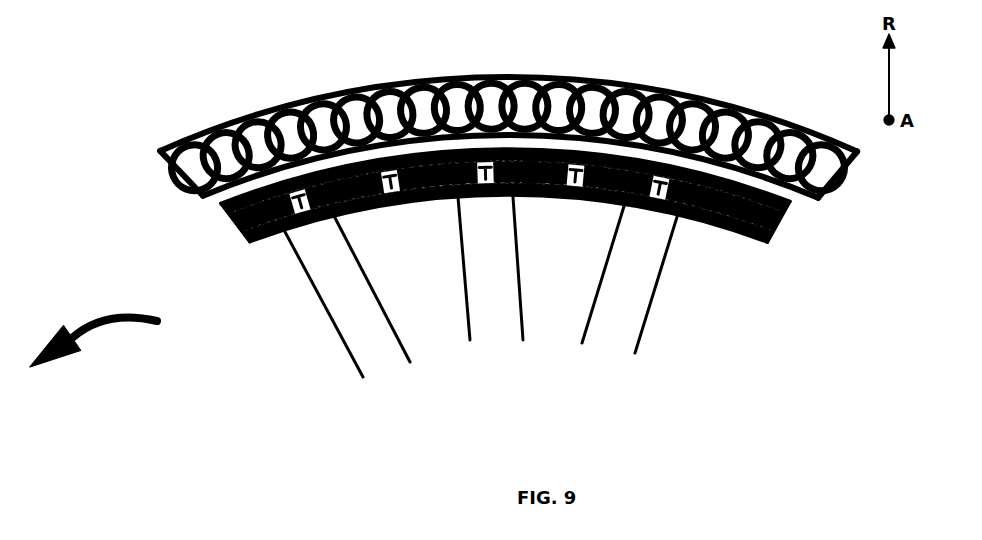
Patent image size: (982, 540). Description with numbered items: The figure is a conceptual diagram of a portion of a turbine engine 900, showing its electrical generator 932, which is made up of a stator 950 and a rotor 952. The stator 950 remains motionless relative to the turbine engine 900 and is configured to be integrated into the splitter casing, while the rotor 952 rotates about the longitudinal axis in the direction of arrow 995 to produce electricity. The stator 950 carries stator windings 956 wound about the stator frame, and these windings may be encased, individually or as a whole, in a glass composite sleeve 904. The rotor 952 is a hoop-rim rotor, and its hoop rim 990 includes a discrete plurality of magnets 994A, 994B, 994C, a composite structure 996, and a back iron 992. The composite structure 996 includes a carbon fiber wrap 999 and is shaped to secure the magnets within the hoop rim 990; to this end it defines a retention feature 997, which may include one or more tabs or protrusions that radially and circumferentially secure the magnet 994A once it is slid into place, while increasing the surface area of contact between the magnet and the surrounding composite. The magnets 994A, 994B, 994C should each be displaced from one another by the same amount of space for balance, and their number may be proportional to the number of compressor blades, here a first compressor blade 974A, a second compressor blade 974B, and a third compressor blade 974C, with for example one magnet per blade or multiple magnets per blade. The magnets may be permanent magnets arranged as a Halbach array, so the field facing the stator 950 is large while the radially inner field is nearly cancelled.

The turbine engine 900 is at (140, 78).
The glass composite sleeve 904 is at (823, 162).
The electrical generator 932 is at (866, 208).
The stator 950 is at (874, 158).
The rotor 952 is at (820, 237).
The stator windings 956 is at (720, 104).
The first compressor blade 974A is at (343, 326).
The second compressor blade 974B is at (513, 268).
The third compressor blade 974C is at (693, 290).
The hoop rim 990 is at (158, 225).
The back iron 992 is at (762, 242).
The magnet 994A is at (343, 213).
The magnet 994B is at (538, 175).
The magnet 994C is at (727, 225).
The arrow 995 is at (110, 330).
The composite structure 996 is at (232, 225).
The retention feature 997 is at (397, 193).
The carbon fiber wrap 999 is at (230, 199).